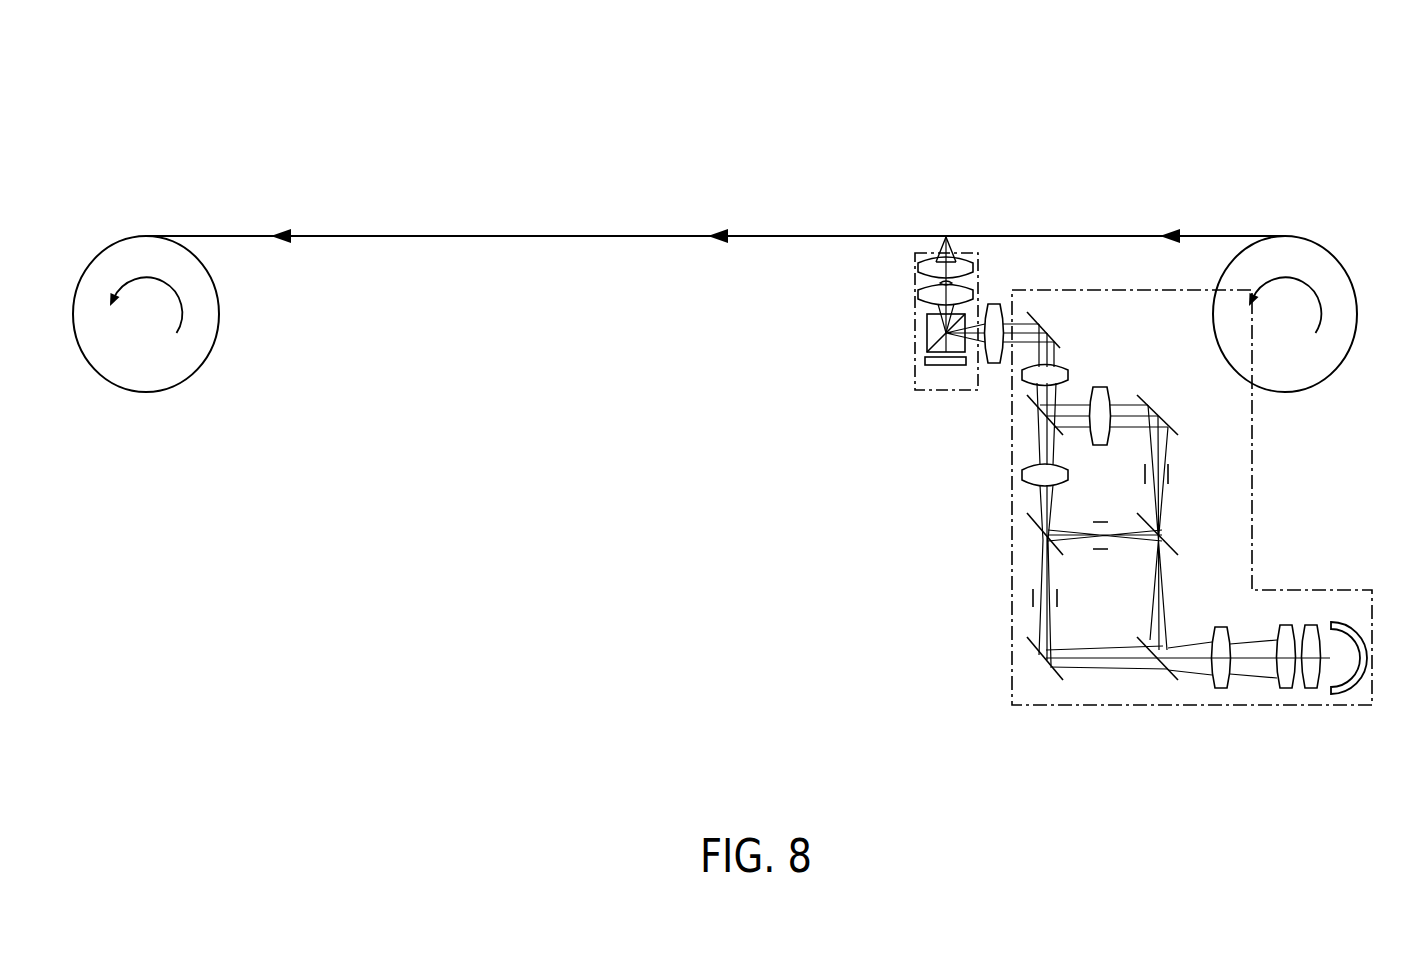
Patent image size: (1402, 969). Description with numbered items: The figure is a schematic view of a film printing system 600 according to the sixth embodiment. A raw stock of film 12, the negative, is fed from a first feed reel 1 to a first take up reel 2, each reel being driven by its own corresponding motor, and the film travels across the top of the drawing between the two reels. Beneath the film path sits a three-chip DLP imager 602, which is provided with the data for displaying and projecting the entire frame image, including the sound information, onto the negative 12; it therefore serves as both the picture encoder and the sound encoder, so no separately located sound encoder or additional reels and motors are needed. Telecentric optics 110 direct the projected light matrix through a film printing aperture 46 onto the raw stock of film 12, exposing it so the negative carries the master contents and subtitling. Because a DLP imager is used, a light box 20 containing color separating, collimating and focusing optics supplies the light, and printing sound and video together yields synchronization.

The film printing system 600 is at (1320, 106).
The raw stock of film 12 is at (1218, 235).
The first feed reel 1 is at (1339, 258).
The first take up reel 2 is at (128, 393).
The telecentric optics 110 is at (924, 317).
The film printing aperture 46 is at (949, 237).
The three-chip DLP imager 602 is at (951, 390).
The light box 20 is at (1012, 587).